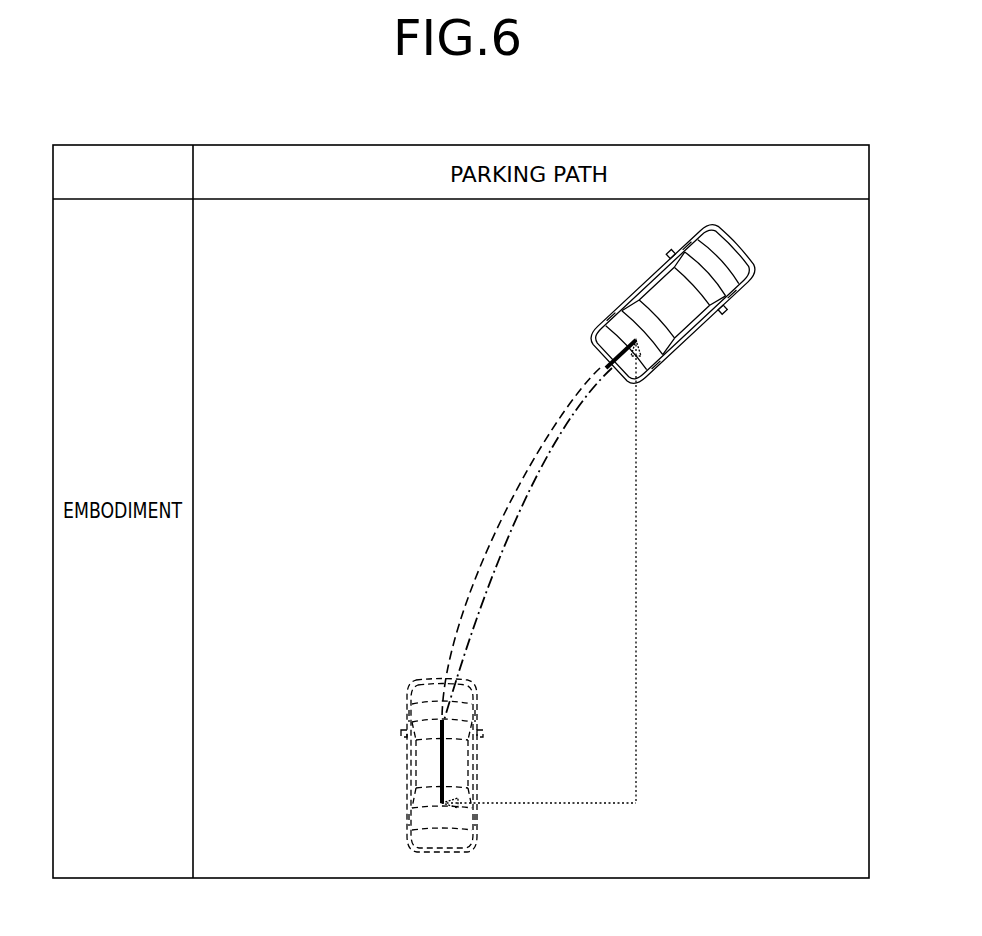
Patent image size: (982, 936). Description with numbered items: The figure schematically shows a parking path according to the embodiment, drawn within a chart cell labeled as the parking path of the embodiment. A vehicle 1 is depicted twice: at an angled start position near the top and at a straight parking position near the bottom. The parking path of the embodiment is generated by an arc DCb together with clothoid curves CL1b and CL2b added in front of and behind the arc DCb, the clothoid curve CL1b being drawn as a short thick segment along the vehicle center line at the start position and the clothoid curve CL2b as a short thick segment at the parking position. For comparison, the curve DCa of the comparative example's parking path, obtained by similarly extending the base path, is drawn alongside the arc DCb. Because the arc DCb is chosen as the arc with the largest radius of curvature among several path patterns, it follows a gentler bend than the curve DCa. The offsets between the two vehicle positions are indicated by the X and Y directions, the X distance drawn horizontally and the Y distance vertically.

The vehicle 1 is at (737, 253).
The clothoid curve CL1b is at (612, 362).
The clothoid curve CL2b is at (438, 783).
The curve DCa is at (503, 508).
The arc DCb is at (509, 538).
The X direction X is at (539, 816).
The Y direction Y is at (646, 571).